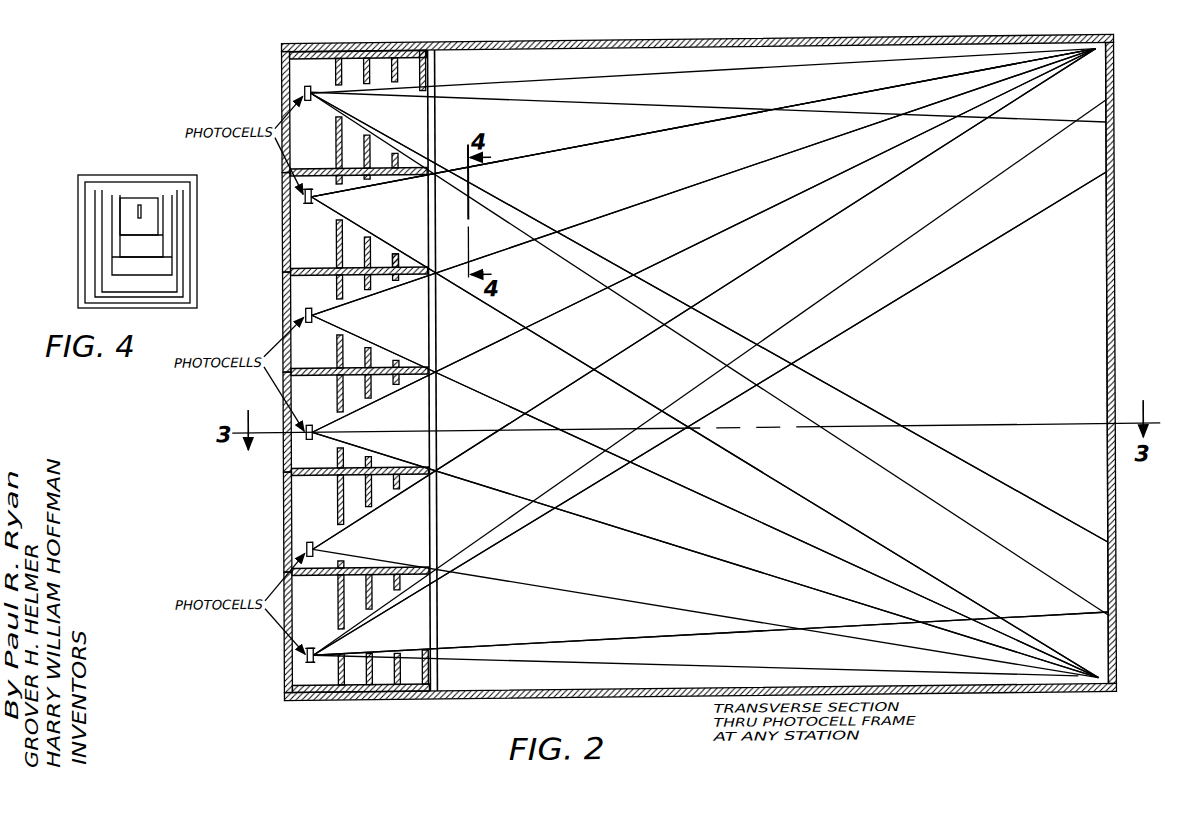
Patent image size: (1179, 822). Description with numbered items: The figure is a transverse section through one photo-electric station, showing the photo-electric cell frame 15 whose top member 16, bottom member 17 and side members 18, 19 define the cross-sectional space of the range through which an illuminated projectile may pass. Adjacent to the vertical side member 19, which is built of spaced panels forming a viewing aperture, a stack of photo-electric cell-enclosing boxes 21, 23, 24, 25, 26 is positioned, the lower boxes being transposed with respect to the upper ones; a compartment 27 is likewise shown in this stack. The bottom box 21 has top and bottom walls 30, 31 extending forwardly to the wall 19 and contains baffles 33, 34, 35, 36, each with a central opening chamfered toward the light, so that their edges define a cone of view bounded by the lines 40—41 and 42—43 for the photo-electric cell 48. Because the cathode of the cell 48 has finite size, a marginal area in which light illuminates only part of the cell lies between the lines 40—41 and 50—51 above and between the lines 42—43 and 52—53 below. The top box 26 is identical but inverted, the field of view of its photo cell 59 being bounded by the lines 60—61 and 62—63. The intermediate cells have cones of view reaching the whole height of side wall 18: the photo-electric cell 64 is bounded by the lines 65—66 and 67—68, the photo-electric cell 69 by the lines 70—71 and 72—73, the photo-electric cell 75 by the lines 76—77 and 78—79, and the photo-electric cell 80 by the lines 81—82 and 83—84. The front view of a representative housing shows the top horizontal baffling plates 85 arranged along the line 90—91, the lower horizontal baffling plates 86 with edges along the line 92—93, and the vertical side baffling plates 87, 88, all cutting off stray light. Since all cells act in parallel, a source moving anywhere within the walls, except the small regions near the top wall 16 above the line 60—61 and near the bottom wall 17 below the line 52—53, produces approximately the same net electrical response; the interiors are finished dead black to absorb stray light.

In FIG. 2, the photo-electric cell frame 15 is at (1115, 107).
In FIG. 2, the top member 16 is at (690, 39).
In FIG. 2, the bottom member 17 is at (630, 696).
In FIG. 2, the side member 18 is at (1115, 238).
In FIG. 2, the side member 19 is at (437, 325).
In FIG. 2, the photo-electric cell-enclosing box 21 is at (283, 664).
In FIG. 2, the photo-electric cell-enclosing box 23 is at (291, 368).
In FIG. 2, the photo-electric cell-enclosing box 24 is at (283, 293).
In FIG. 2, the photo-electric cell-enclosing box 25 is at (283, 225).
In FIG. 2, the photo-electric cell-enclosing box 26 is at (283, 72).
In FIG. 2, the photocell compartment 27 is at (283, 508).
In FIG. 2, the top wall 30 is at (362, 690).
In FIG. 2, the bottom wall 31 is at (325, 571).
In FIG. 2, the baffle 33 is at (340, 688).
In FIG. 2, the baffle 34 is at (368, 688).
In FIG. 2, the baffle 35 is at (396, 688).
In FIG. 2, the baffle 36 is at (437, 683).
In FIG. 2, the cone of view line 40 is at (315, 644).
In FIG. 2, the cone of view line 41 is at (1052, 211).
In FIG. 2, the cone of view line 42 is at (318, 660).
In FIG. 2, the cone of view line 43 is at (1052, 616).
In FIG. 2, the photo-electric cell 48 is at (309, 644).
In FIG. 2, the marginal area line 50 is at (374, 605).
In FIG. 2, the marginal area line 51 is at (1052, 143).
In FIG. 2, the marginal area line 52 is at (365, 646).
In FIG. 2, the marginal area line 53 is at (940, 655).
In FIG. 2, the photo-electric cell 59 is at (306, 86).
In FIG. 2, the field of view line 60 is at (378, 90).
In FIG. 2, the field of view line 61 is at (928, 56).
In FIG. 2, the field of view line 62 is at (375, 127).
In FIG. 2, the field of view line 63 is at (1055, 585).
In FIG. 2, the photo-electric cell 64 is at (306, 544).
In FIG. 2, the cone of view line 65 is at (380, 505).
In FIG. 2, the cone of view line 66 is at (1012, 99).
In FIG. 2, the cone of view line 67 is at (378, 556).
In FIG. 2, the cone of view line 68 is at (943, 636).
In FIG. 2, the photo-electric cell 69 is at (306, 431).
In FIG. 2, the cone of view line 70 is at (384, 393).
In FIG. 2, the cone of view line 71 is at (932, 123).
In FIG. 2, the cone of view line 72 is at (352, 446).
In FIG. 2, the cone of view line 73 is at (878, 588).
In FIG. 2, the photo-electric cell 75 is at (306, 311).
In FIG. 2, the cone of view line 76 is at (384, 286).
In FIG. 2, the cone of view line 77 is at (892, 115).
In FIG. 2, the cone of view line 78 is at (358, 336).
In FIG. 2, the cone of view line 79 is at (878, 554).
In FIG. 2, the photo-electric cell 80 is at (306, 192).
In FIG. 2, the cone of view line 81 is at (396, 178).
In FIG. 2, the cone of view line 82 is at (896, 82).
In FIG. 2, the cone of view line 83 is at (368, 236).
In FIG. 2, the cone of view line 84 is at (948, 572).
In FIG. 2, the top horizontal baffling plate 85 is at (422, 178).
In FIG. 4, the top horizontal baffling plate 85 is at (145, 190).
In FIG. 2, the lower horizontal baffling plate 86 is at (425, 265).
In FIG. 4, the lower horizontal baffling plate 86 is at (132, 245).
In FIG. 4, the vertical side baffling plate 87 is at (197, 212).
In FIG. 4, the vertical side baffling plate 88 is at (112, 217).
In FIG. 2, the baffling plate alignment line 90 is at (314, 184).
In FIG. 2, the baffling plate alignment line 91 is at (503, 170).
In FIG. 2, the baffling plate alignment line 92 is at (316, 201).
In FIG. 2, the baffling plate alignment line 93 is at (382, 230).